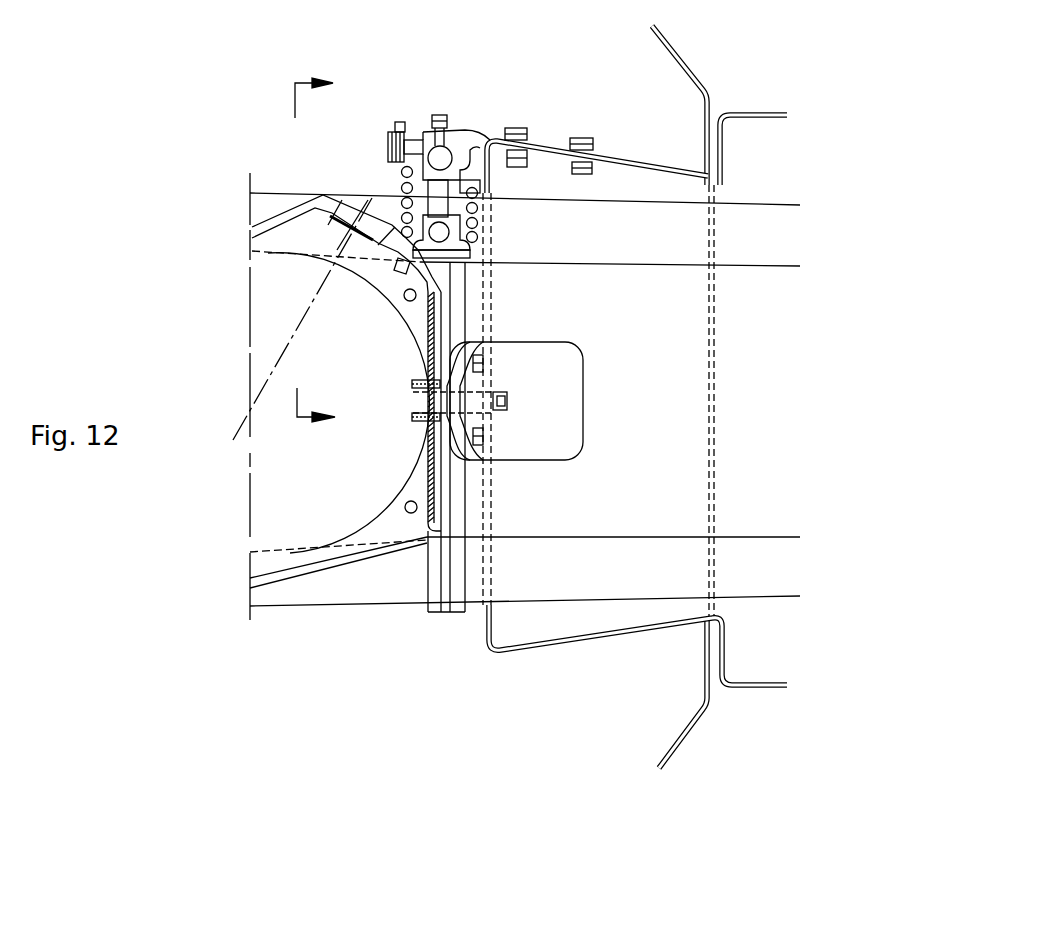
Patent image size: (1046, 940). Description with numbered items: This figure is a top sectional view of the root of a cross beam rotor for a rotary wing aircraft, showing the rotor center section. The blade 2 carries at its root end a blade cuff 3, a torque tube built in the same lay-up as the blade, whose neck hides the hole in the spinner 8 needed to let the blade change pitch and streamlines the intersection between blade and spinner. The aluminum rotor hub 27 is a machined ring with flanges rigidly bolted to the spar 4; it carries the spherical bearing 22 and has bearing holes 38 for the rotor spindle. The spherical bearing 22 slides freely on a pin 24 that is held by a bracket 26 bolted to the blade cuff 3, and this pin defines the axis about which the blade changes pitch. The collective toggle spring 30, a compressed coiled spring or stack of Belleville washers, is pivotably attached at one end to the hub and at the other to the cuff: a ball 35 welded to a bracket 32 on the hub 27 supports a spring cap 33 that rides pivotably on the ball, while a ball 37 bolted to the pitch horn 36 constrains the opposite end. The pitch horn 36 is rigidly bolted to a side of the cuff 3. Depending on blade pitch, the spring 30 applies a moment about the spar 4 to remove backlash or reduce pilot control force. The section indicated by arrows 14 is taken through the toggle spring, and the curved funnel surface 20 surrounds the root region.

The blade 2 is at (762, 688).
The blade cuff 3 is at (600, 642).
The spar 4 is at (378, 606).
The spinner 8 is at (687, 745).
The section line 14 is at (334, 252).
The funnel 20 is at (290, 488).
The spherical bearing 22 is at (413, 383).
The pin 24 is at (413, 418).
The bracket 26 is at (468, 342).
The rotor hub 27 is at (252, 212).
The collective toggle spring 30 is at (400, 185).
The bracket 32 is at (462, 262).
The spring cap 33 is at (470, 240).
The ball 35 is at (420, 258).
The pitch horn 36 is at (545, 116).
The ball 37 is at (438, 113).
The bearing holes 38 is at (326, 198).